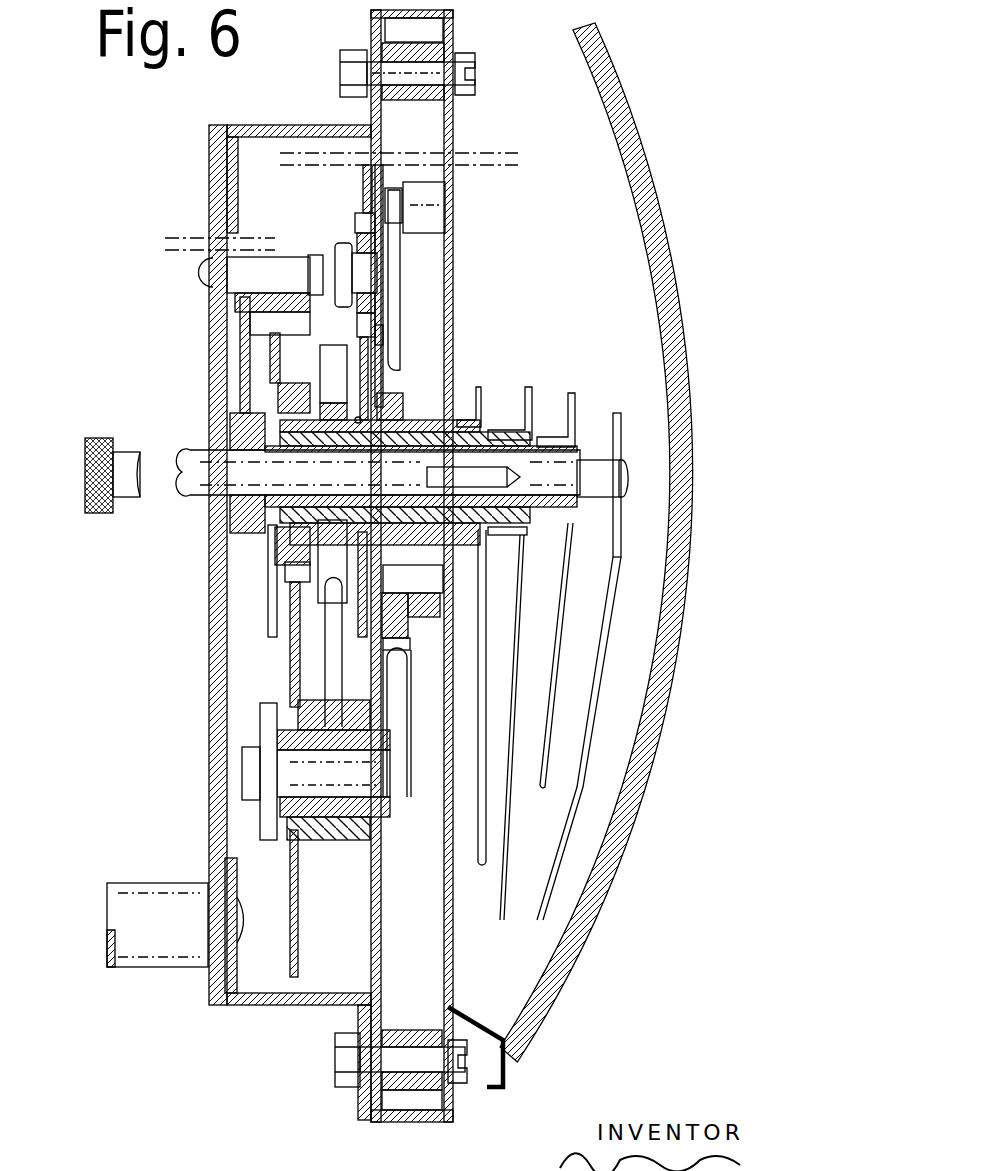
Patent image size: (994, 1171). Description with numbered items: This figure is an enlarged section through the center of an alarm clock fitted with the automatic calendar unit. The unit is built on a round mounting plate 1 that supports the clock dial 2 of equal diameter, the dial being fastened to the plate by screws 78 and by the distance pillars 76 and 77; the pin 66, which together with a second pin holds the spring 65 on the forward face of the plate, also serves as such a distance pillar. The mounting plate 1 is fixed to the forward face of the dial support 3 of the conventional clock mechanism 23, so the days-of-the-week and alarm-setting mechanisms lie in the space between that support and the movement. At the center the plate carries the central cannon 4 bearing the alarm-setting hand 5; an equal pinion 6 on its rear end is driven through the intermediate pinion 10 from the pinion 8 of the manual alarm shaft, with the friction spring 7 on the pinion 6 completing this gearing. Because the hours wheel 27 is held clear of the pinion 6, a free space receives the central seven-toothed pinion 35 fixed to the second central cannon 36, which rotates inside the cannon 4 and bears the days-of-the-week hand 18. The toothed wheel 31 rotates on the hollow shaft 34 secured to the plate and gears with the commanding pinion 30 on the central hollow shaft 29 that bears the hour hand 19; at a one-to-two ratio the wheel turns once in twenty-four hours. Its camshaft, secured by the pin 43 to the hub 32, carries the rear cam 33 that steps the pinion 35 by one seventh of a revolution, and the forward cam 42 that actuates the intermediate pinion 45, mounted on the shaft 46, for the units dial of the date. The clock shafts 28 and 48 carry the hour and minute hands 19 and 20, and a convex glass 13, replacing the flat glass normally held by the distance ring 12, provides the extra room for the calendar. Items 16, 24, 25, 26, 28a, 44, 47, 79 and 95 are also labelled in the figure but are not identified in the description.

The mounting plate 1 is at (382, 960).
The clock dial 2 is at (452, 987).
The dial support 3 is at (262, 1005).
The central cannon 4 is at (412, 418).
The central hand for alarm setting 5 is at (486, 575).
The central cannon pinion 6 is at (383, 337).
The spring 7 is at (383, 378).
The pinion 8 is at (363, 193).
The intermediate pinion 10 is at (356, 240).
The distance ring 12 is at (470, 1013).
The convex glass 13 is at (578, 968).
The shaft 16 is at (190, 447).
The central hand for days of the week 18 is at (508, 835).
The hour hand 19 is at (572, 395).
The minute hand 20 is at (598, 665).
The clock mechanism 23 is at (205, 990).
The bead 24 is at (244, 918).
The tube 25 is at (155, 893).
The hub 26 is at (236, 540).
The hours wheel 27 is at (288, 633).
The shaft 28 is at (242, 365).
The bolt 28a is at (262, 323).
The central hollow shaft 29 is at (575, 447).
The commanding pinion 30 is at (272, 557).
The toothed wheel 31 is at (300, 947).
The hub 32 is at (350, 842).
The rear cam 33 is at (336, 638).
The hollow shaft 34 is at (316, 782).
The central cannon pinion for days of the week 35 is at (335, 382).
The second central cannon 36 is at (532, 427).
The forward cam 42 is at (398, 728).
The pin 43 is at (260, 828).
The washer plate 44 is at (258, 722).
The intermediate pinion 45 is at (432, 655).
The shaft 46 is at (449, 620).
The ring 47 is at (440, 583).
The shaft 48 is at (626, 475).
The spring 65 is at (396, 305).
The pin 66 is at (440, 220).
The distance pillar 76 is at (405, 1037).
The distance pillar 77 is at (418, 98).
The screw 78 is at (468, 88).
The nut 79 is at (345, 90).
The knob 95 is at (105, 513).